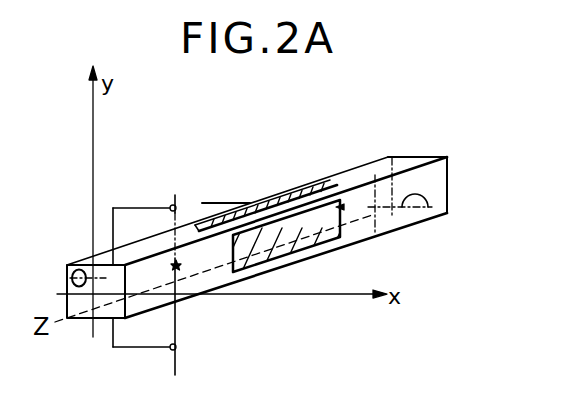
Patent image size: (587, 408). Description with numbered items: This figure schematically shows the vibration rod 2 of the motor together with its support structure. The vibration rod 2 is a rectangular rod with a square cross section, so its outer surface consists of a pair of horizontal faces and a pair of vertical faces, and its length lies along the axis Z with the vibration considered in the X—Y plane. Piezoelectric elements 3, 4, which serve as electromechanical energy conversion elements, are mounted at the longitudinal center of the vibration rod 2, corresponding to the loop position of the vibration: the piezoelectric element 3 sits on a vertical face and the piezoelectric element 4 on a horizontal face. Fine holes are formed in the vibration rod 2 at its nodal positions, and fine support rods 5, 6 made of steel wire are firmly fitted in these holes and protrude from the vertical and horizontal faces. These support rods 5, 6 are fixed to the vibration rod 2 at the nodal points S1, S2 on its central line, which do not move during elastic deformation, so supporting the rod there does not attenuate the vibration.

The vibration rod 2 is at (450, 198).
The piezoelectric element 3 is at (323, 238).
The piezoelectric element 4 is at (247, 202).
The support rod 5 is at (218, 202).
The support rod 6 is at (172, 199).
The nodal point S1 is at (180, 266).
The nodal point S2 is at (342, 207).